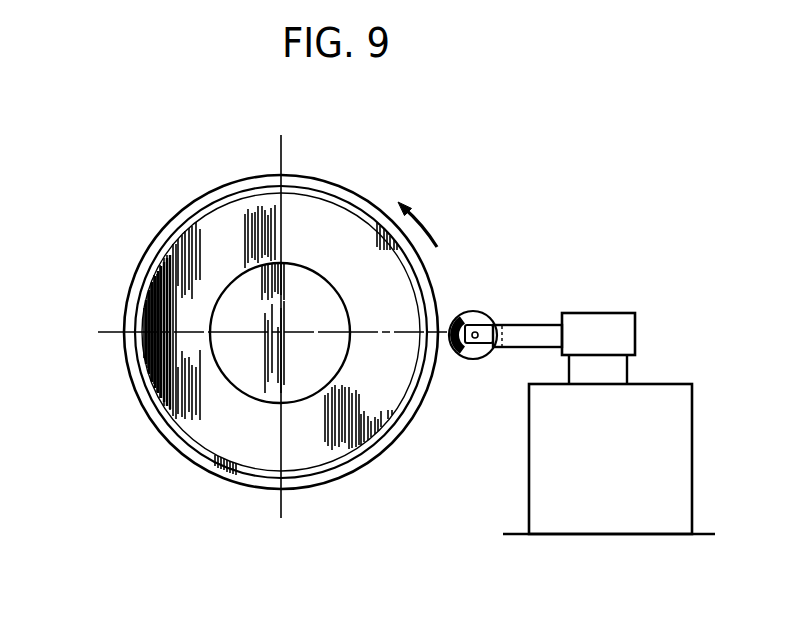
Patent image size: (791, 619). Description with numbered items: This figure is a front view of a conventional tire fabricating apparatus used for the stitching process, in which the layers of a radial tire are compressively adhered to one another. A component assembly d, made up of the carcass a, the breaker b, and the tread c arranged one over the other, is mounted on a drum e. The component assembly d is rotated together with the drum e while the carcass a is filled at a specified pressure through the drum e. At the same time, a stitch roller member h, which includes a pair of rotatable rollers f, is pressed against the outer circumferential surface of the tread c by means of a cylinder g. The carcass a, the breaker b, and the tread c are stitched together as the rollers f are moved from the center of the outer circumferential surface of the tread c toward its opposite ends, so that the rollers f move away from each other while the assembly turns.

The carcass a is at (160, 436).
The breaker b is at (183, 452).
The tread c is at (197, 462).
The component assembly d is at (260, 361).
The drum e is at (222, 300).
The roller f is at (485, 310).
The cylinder g is at (600, 306).
The stitch roller member h is at (474, 300).